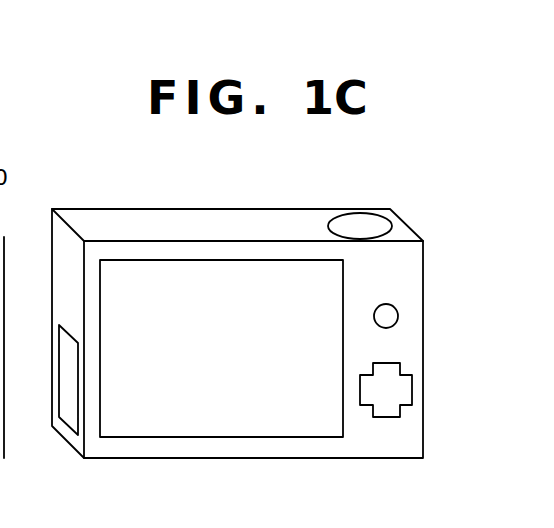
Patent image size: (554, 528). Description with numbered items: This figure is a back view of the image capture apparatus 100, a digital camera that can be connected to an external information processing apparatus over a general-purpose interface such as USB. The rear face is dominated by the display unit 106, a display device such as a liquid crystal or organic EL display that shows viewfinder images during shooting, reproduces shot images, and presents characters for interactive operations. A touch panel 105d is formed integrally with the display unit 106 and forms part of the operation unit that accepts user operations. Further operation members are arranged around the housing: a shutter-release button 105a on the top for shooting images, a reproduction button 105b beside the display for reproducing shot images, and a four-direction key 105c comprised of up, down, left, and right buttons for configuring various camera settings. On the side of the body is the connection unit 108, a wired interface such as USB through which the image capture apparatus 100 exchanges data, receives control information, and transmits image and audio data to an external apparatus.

The image capture apparatus 100 is at (147, 222).
The shutter-release button 105a is at (357, 229).
The reproduction button 105b is at (397, 307).
The four-direction key 105c is at (395, 389).
The touch panel 105d is at (201, 277).
The display unit 106 is at (280, 260).
The connection unit 108 is at (67, 332).